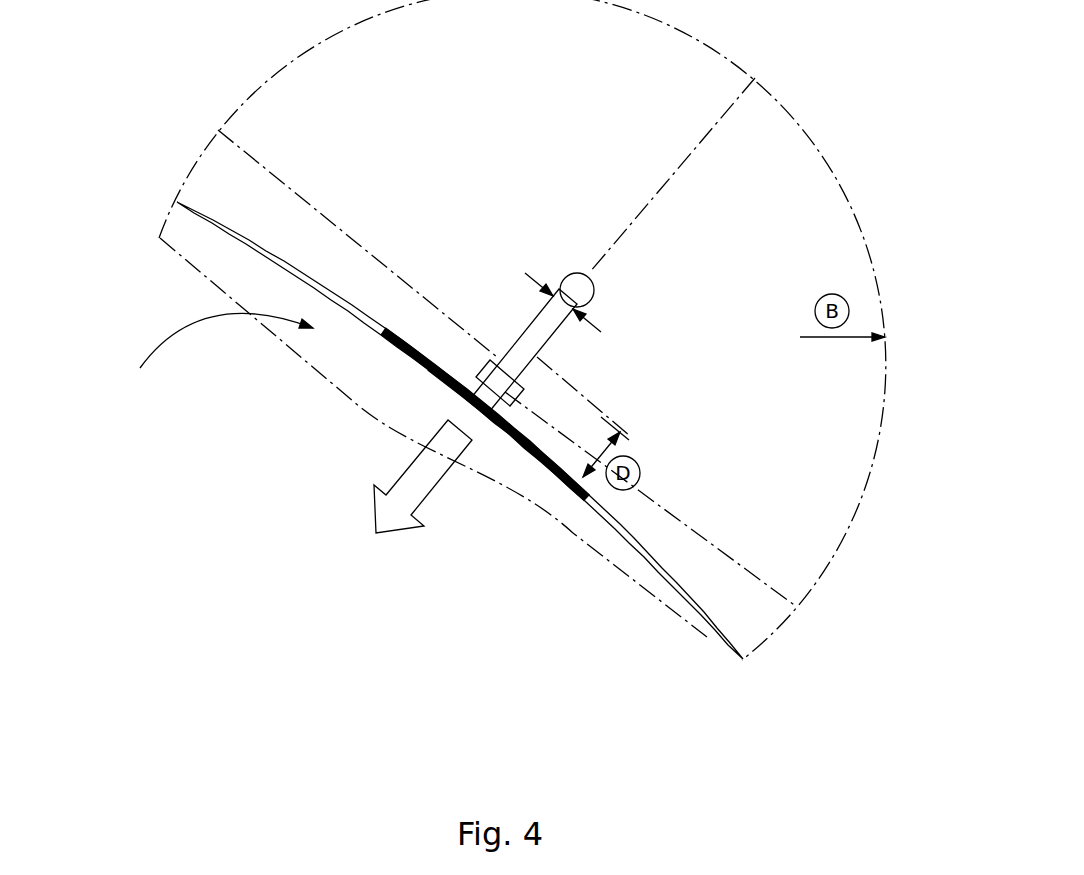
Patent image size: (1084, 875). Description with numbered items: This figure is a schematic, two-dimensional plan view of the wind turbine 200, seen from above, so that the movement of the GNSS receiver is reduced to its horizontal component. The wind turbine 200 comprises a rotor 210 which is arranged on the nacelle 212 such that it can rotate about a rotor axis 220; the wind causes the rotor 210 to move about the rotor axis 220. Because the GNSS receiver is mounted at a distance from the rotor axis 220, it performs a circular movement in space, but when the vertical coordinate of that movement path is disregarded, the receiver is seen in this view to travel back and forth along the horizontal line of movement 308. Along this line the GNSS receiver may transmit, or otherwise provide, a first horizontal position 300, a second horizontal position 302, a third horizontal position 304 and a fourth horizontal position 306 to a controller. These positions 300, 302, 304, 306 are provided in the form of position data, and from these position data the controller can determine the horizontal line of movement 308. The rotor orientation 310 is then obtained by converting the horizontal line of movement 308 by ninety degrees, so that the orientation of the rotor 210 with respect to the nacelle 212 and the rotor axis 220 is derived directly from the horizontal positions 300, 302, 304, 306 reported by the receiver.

The wind turbine 200 is at (147, 133).
The rotor 210 is at (198, 352).
The nacelle 212 is at (540, 308).
The rotor axis 220 is at (681, 160).
The first horizontal position 300 is at (400, 330).
The second horizontal position 302 is at (452, 358).
The third horizontal position 304 is at (522, 407).
The fourth horizontal position 306 is at (565, 487).
The horizontal line of movement 308 is at (417, 347).
The rotor orientation 310 is at (400, 534).